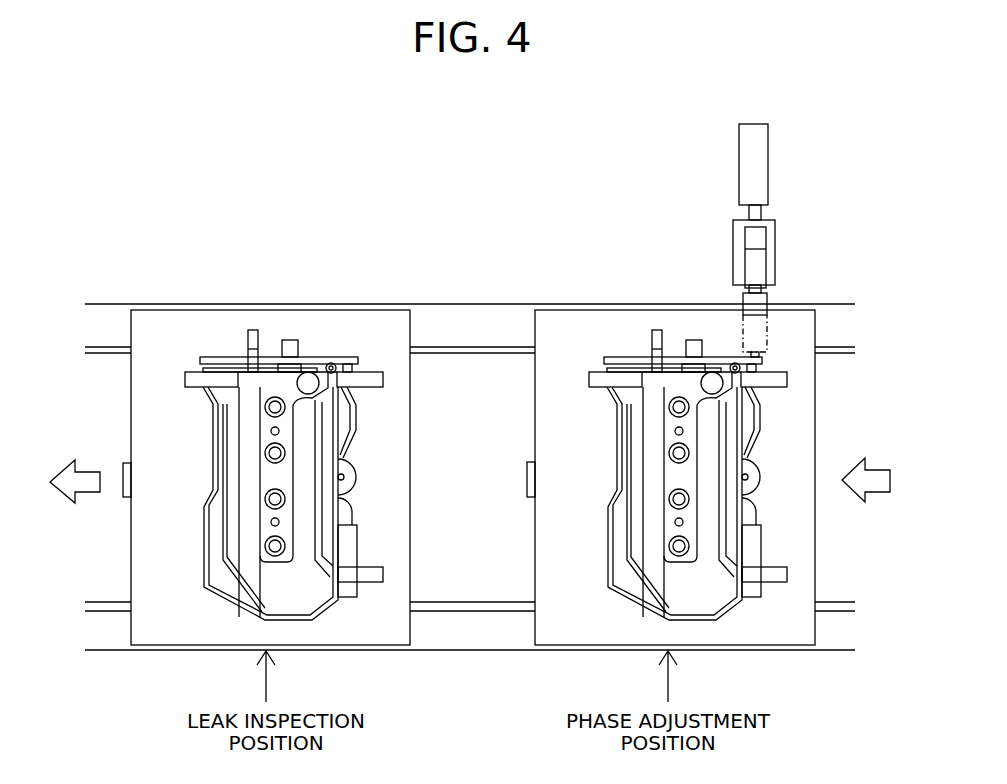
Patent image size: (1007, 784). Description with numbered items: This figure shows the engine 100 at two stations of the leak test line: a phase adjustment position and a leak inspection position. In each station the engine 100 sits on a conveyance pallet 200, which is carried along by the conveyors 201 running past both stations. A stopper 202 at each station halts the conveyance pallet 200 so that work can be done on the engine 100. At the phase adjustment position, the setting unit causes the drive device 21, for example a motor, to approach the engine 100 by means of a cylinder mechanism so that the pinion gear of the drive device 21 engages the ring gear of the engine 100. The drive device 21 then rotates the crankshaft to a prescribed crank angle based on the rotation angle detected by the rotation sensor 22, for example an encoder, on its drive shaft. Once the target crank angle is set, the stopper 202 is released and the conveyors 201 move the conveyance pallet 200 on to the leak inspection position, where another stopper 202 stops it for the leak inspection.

The engine 100 is at (267, 375).
The conveyance pallet 200 is at (160, 338).
The conveyors 201 is at (848, 347).
The stopper 202 is at (123, 470).
The drive device 21 is at (760, 265).
The rotation sensor 22 is at (748, 240).